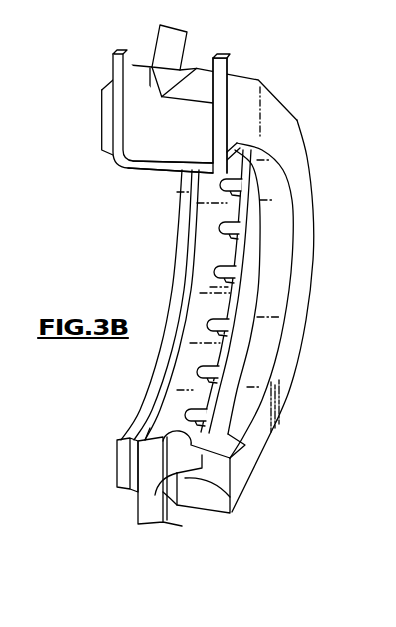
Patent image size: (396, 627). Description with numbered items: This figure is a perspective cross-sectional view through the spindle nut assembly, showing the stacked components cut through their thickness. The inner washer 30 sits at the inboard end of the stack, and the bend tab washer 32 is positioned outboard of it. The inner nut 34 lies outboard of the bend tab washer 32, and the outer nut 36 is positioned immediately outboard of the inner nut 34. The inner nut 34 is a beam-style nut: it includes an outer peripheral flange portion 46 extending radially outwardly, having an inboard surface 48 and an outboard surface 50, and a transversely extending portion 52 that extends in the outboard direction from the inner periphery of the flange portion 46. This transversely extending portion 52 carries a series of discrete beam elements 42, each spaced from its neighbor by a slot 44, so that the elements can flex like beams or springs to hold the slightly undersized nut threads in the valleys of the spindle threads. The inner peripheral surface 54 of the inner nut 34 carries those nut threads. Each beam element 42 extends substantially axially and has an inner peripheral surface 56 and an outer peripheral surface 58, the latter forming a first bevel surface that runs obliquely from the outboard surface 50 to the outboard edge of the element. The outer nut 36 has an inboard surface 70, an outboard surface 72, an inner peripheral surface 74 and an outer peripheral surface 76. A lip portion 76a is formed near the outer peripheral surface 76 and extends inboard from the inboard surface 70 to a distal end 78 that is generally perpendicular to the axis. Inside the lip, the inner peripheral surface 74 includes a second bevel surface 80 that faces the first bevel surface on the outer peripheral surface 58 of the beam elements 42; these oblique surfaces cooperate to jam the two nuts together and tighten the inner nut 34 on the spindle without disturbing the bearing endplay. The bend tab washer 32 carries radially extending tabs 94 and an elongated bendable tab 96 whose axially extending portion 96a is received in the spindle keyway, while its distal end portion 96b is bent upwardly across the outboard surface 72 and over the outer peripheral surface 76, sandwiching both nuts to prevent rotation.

The inner washer 30 is at (177, 247).
The bend tab washer 32 is at (190, 216).
The inner nut 34 is at (195, 293).
The outer nut 36 is at (258, 190).
The beam elements 42 is at (233, 305).
The slot 44 is at (237, 242).
The outer peripheral flange portion 46 is at (150, 518).
The inboard surface 48 is at (135, 512).
The outboard surface 50 is at (187, 508).
The transversely extending portion 52 is at (177, 398).
The inner peripheral surface 54 is at (147, 427).
The inner peripheral surface 56 is at (250, 448).
The outer peripheral surface 58 is at (220, 497).
The inboard surface 70 is at (265, 377).
The outboard surface 72 is at (280, 395).
The inner peripheral surface 74 is at (299, 289).
The outer peripheral surface 76 is at (220, 513).
The lip portion 76a is at (187, 494).
The distal end 78 is at (160, 495).
The second bevel surface 80 is at (185, 62).
The tabs 94 is at (176, 112).
The elongated bendable tab 96 is at (112, 172).
The axially extending portion 96a is at (147, 169).
The distal end portion 96b is at (228, 62).